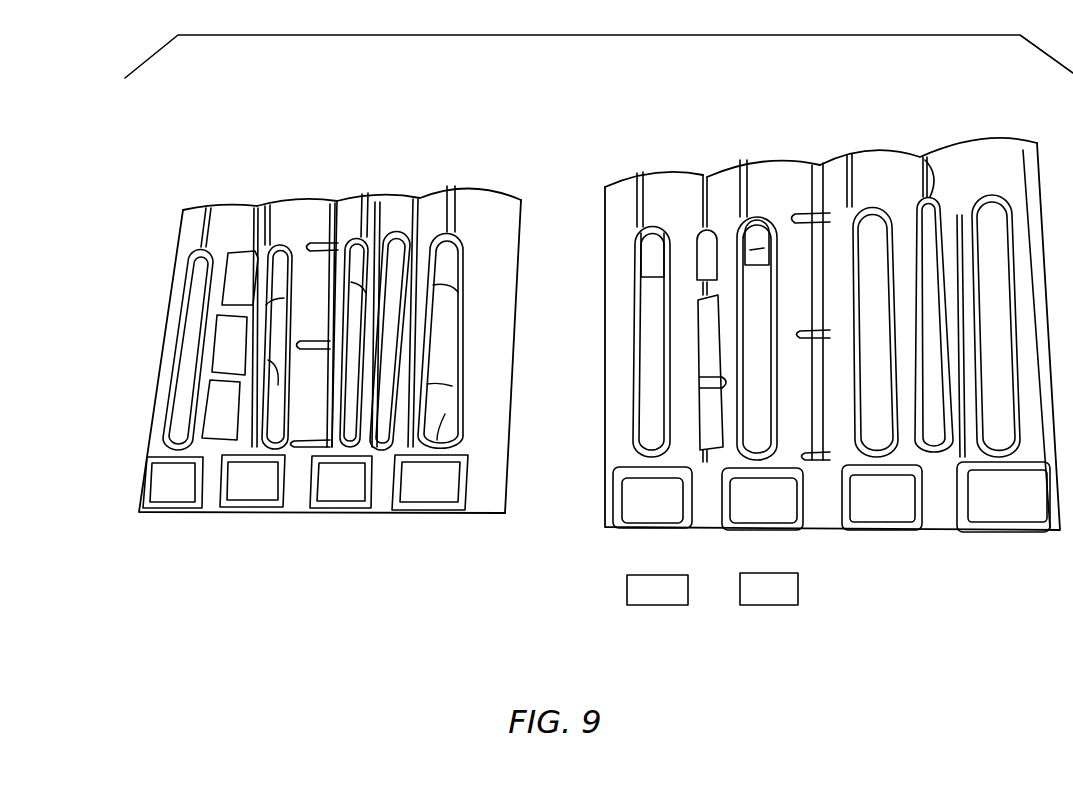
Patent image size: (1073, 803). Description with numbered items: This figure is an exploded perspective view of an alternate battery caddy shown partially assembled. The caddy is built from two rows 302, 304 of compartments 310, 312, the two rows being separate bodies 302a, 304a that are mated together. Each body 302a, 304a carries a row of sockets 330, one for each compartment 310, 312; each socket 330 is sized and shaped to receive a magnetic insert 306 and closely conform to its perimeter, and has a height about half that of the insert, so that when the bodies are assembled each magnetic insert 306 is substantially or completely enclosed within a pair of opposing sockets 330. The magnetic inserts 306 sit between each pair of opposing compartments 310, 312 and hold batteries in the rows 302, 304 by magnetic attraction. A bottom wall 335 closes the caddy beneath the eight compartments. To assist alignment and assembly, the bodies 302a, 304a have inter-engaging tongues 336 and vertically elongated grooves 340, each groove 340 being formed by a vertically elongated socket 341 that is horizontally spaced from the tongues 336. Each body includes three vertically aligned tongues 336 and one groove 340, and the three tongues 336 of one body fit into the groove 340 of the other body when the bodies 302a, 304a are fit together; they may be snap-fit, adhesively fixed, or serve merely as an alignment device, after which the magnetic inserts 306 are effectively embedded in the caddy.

The row of compartments 302 is at (483, 521).
The body 302a is at (529, 217).
The row of compartments 304 is at (1013, 540).
The body 304a is at (688, 160).
The magnetic insert 306 is at (1003, 500).
The compartment 310 is at (278, 200).
The compartment 312 is at (653, 170).
The socket 330 is at (248, 483).
The bottom wall 335 is at (280, 510).
The tongue 336 is at (235, 273).
The groove 340 is at (398, 243).
The vertically elongated socket 341 is at (395, 240).